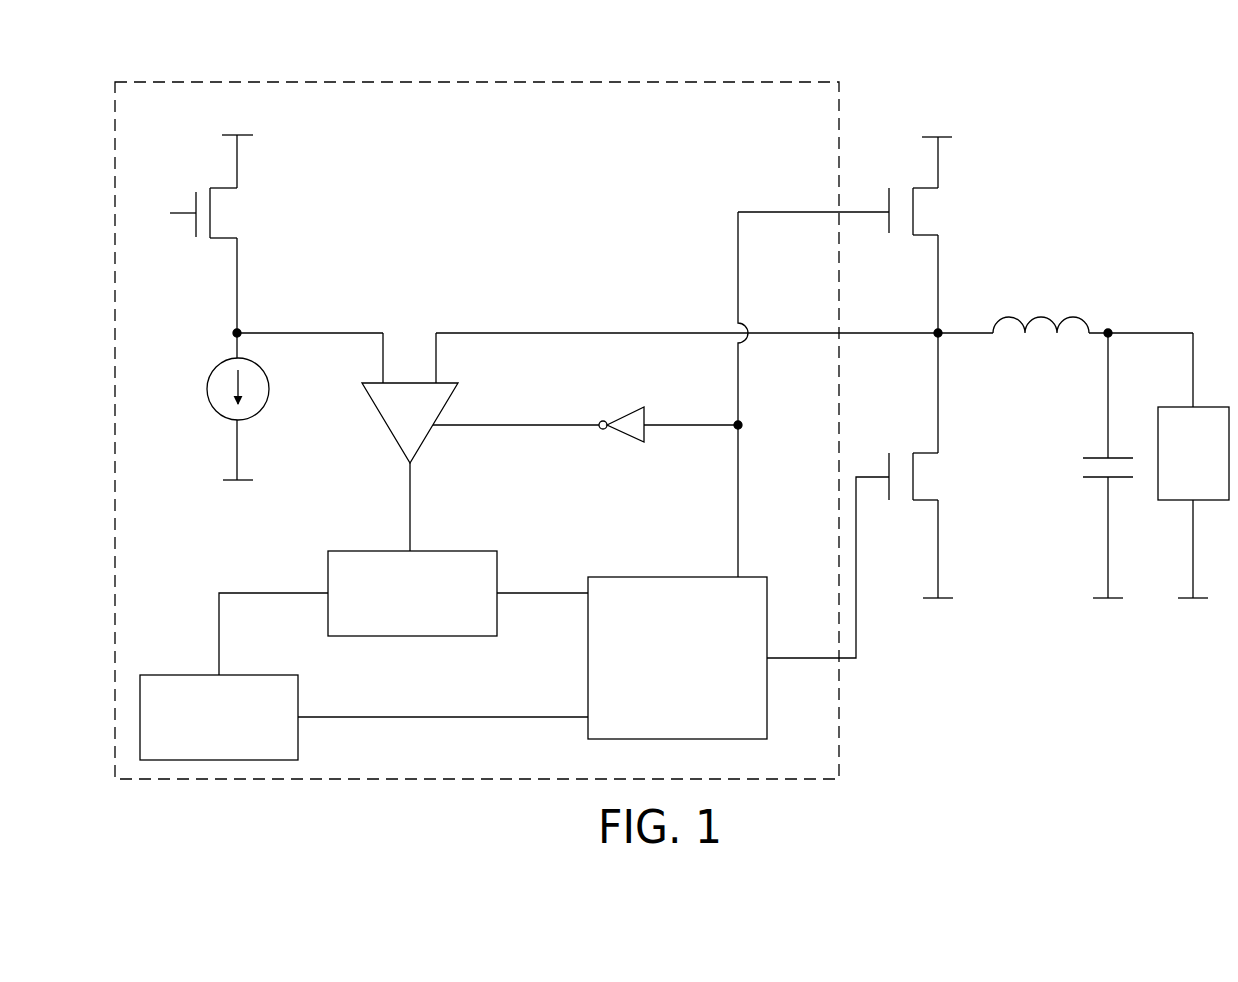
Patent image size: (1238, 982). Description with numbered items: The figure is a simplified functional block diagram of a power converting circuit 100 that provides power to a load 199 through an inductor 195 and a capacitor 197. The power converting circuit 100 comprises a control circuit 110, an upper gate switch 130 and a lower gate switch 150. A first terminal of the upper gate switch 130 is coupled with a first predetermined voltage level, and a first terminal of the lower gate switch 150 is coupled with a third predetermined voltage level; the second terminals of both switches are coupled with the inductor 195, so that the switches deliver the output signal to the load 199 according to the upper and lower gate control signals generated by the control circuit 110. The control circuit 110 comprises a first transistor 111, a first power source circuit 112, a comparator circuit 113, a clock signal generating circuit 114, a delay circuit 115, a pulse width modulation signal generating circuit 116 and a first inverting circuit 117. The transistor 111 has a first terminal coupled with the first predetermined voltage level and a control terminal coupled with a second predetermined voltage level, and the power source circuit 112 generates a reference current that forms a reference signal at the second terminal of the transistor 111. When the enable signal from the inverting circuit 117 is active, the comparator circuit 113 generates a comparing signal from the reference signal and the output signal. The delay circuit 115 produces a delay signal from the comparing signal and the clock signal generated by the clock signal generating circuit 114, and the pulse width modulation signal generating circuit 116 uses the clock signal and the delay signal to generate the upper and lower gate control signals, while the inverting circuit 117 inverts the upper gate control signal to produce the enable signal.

The power converting circuit 100 is at (1067, 156).
The control circuit 110 is at (841, 757).
The first transistor 111 is at (251, 212).
The first power source circuit 112 is at (207, 389).
The comparator circuit 113 is at (380, 425).
The clock signal generating circuit 114 is at (183, 675).
The delay circuit 115 is at (378, 551).
The pulse width modulation signal generating circuit 116 is at (590, 739).
The first inverting circuit 117 is at (625, 407).
The upper gate switch 130 is at (899, 240).
The lower gate switch 150 is at (908, 435).
The inductor 195 is at (1042, 315).
The capacitor 197 is at (1086, 467).
The load 199 is at (1178, 501).